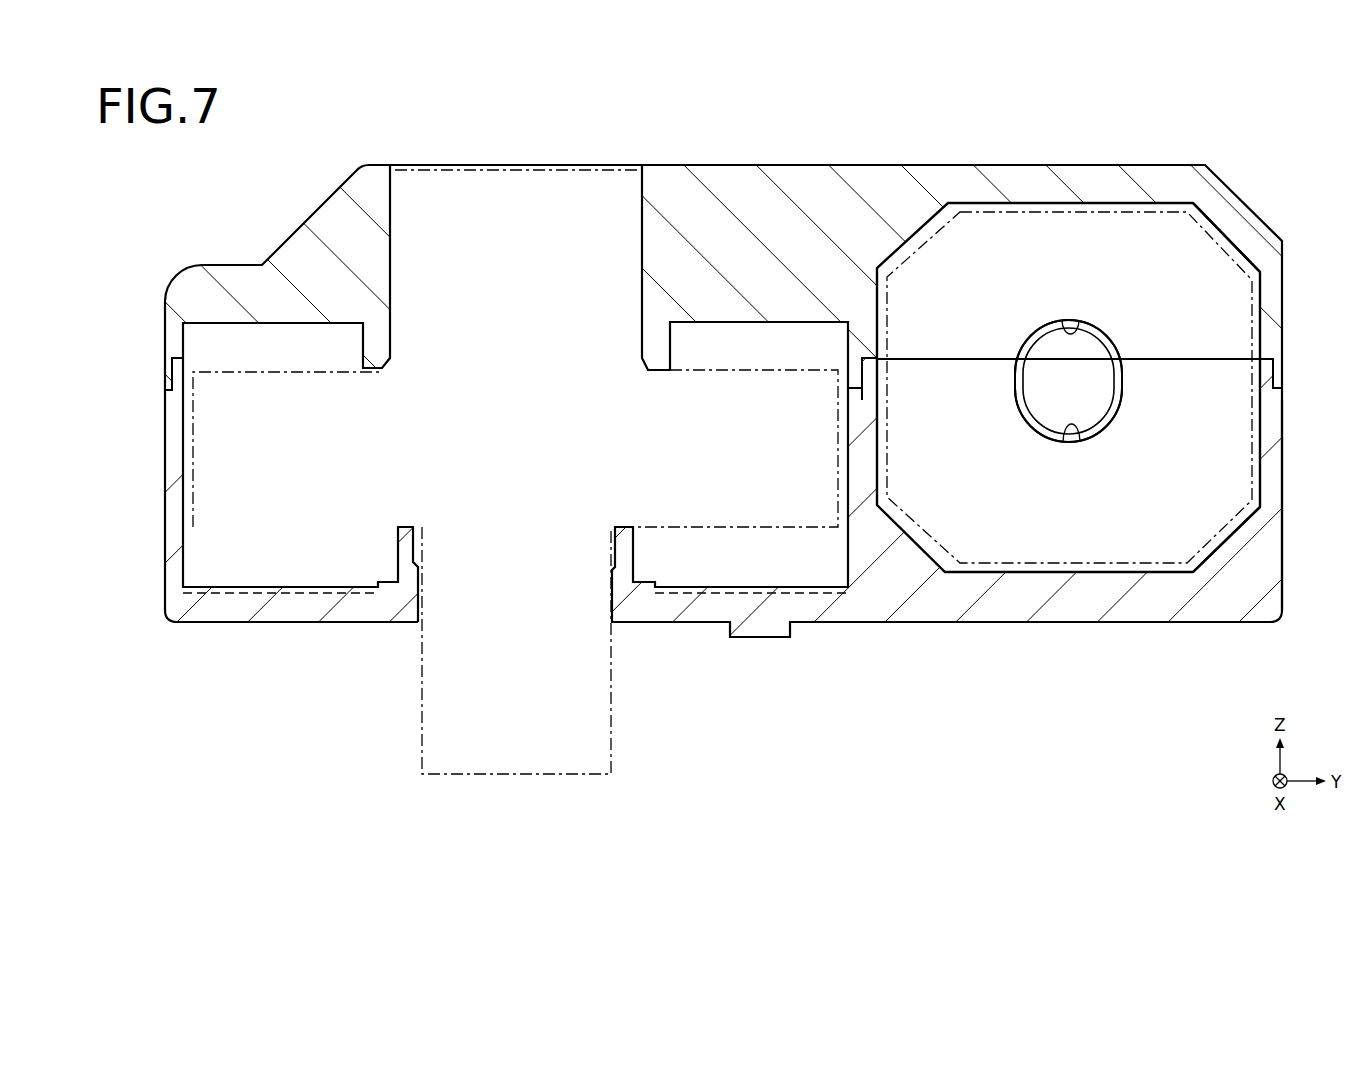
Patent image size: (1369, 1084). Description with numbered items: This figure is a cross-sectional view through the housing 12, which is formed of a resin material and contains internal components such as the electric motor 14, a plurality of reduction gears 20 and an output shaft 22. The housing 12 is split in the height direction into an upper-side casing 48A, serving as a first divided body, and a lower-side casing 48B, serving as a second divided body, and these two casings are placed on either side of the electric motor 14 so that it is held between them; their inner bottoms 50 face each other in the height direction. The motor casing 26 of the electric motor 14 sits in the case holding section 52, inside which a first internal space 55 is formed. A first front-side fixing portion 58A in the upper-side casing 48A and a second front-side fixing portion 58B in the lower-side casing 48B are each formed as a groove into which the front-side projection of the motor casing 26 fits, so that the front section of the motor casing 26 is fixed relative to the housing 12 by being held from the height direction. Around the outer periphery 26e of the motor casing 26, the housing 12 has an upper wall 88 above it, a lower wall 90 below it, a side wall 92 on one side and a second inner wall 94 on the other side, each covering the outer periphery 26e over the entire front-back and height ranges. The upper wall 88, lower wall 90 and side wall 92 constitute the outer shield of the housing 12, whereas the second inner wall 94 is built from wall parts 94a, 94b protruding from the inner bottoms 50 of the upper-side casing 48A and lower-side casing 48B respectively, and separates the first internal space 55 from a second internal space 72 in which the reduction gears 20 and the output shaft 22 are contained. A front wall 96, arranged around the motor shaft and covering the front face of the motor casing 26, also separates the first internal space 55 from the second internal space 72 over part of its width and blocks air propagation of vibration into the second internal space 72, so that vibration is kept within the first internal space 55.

The housing 12 is at (1177, 385).
The electric motor 14 is at (1262, 292).
The reduction gears 20 is at (268, 493).
The output shaft 22 is at (588, 694).
The motor casing 26 is at (1262, 333).
The outer periphery 26e is at (1137, 205).
The upper-side casing 48A is at (1268, 348).
The lower-side casing 48B is at (1270, 445).
The inner bottoms 50 is at (1010, 203).
The case holding section 52 is at (1206, 246).
The first internal space 55 is at (1213, 290).
The first front-side fixing portion 58A is at (1070, 319).
The second front-side fixing portion 58B is at (1071, 443).
The second internal space 72 is at (757, 340).
The upper wall 88 is at (1066, 178).
The lower wall 90 is at (1081, 600).
The side wall 92 is at (1273, 494).
The second inner wall 94 is at (954, 371).
The wall part 94a is at (866, 334).
The wall part 94b is at (866, 438).
The front wall 96 is at (1188, 507).